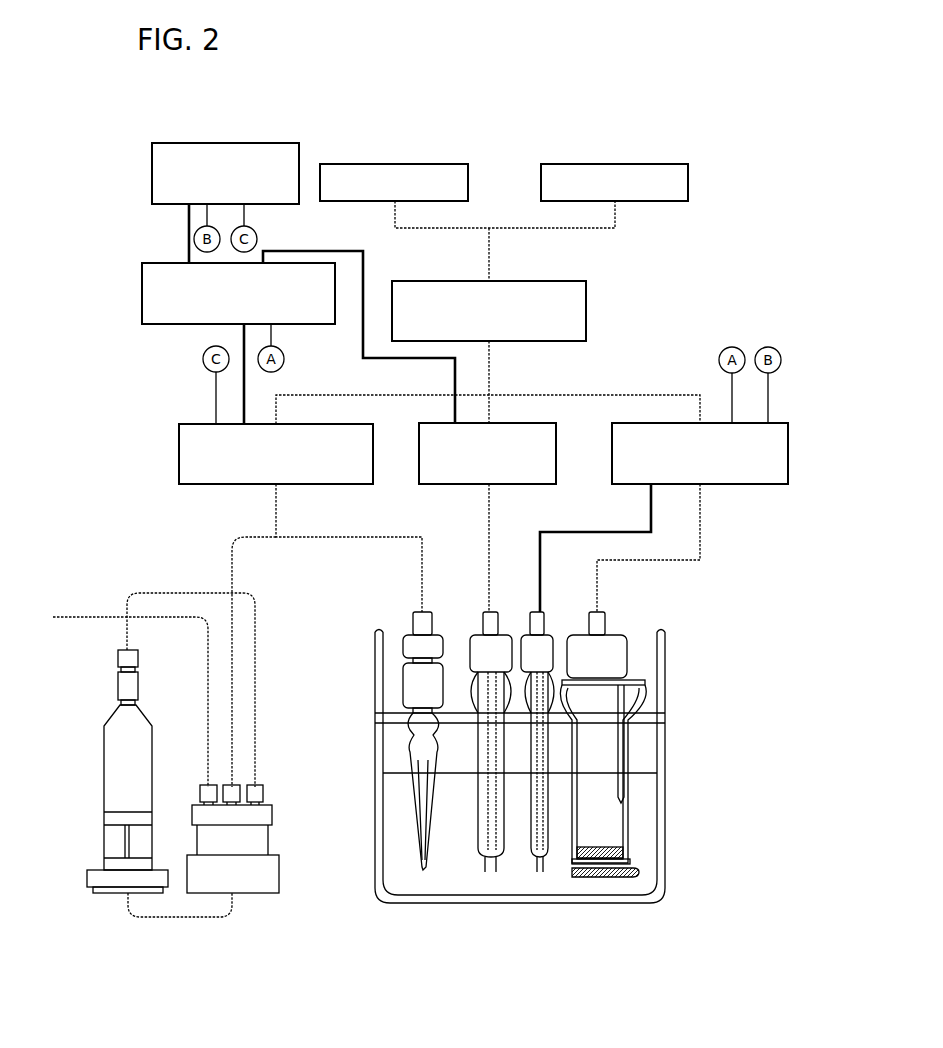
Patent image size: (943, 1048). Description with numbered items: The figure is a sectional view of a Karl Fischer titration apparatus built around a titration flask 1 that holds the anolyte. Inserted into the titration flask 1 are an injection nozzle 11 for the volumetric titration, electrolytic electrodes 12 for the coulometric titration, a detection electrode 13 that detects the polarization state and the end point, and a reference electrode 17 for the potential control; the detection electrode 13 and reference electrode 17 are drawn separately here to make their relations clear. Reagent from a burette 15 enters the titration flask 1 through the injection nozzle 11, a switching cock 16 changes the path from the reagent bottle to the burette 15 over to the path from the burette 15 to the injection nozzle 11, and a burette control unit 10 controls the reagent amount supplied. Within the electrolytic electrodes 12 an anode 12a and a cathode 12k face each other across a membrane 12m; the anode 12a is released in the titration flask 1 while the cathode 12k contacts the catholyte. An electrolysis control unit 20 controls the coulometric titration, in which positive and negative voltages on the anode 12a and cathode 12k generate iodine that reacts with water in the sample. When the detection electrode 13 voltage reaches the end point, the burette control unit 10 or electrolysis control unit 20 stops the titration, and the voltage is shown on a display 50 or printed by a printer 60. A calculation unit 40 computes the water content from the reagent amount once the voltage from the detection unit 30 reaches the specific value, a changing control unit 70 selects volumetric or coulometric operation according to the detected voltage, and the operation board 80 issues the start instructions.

The titration flask 1 is at (658, 728).
The burette control unit 10 is at (193, 486).
The injection nozzle 11 is at (412, 752).
The electrolytic electrodes 12 is at (632, 765).
The anode 12a is at (600, 880).
The cathode 12k is at (603, 858).
The membrane 12m is at (627, 862).
The detection electrode 13 is at (488, 800).
The burette 15 is at (108, 770).
The switching cock 16 is at (253, 882).
The reference electrode 17 is at (543, 860).
The electrolysis control unit 20 is at (720, 486).
The detection unit 30 is at (538, 423).
The calculation unit 40 is at (567, 287).
The display 50 is at (337, 162).
The printer 60 is at (567, 162).
The changing control unit 70 is at (168, 266).
The operation board 80 is at (178, 143).